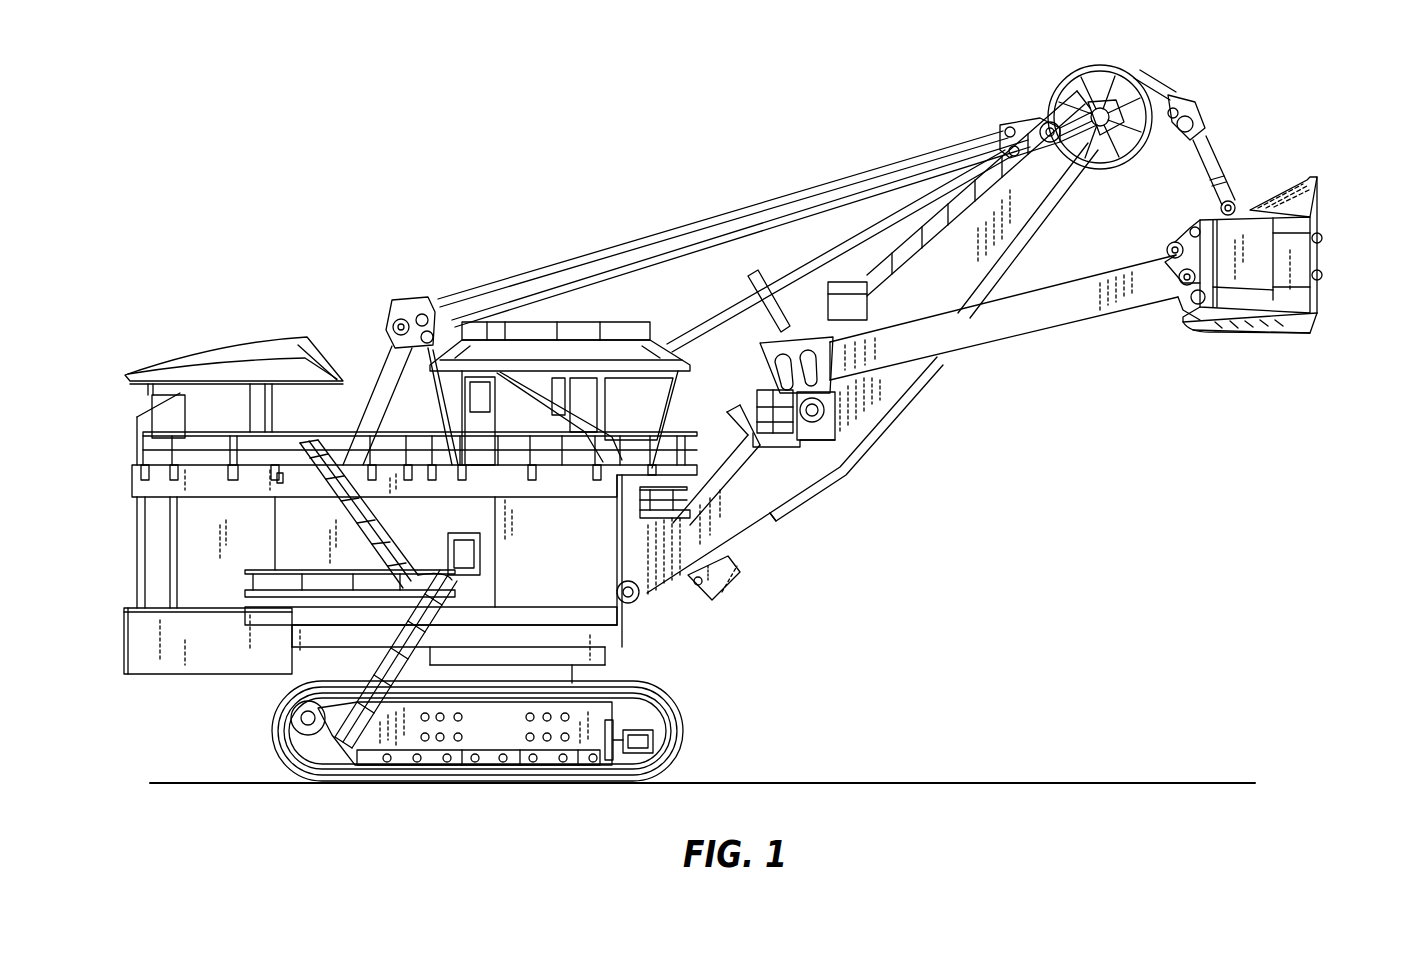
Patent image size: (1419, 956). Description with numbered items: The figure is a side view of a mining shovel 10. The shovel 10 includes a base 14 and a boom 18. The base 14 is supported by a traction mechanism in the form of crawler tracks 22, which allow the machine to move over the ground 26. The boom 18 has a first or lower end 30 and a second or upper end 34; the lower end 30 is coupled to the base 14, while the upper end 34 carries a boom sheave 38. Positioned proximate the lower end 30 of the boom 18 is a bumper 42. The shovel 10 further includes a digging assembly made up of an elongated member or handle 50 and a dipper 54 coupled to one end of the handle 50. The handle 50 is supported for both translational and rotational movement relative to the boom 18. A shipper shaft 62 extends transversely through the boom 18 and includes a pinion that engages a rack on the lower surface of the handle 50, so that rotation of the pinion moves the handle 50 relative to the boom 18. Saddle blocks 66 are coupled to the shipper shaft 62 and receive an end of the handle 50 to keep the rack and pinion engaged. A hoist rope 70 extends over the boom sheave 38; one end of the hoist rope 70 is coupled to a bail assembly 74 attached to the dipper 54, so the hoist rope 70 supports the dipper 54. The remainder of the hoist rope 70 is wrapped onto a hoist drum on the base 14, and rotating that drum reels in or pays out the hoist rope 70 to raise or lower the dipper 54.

The mining shovel 10 is at (326, 186).
The base 14 is at (190, 693).
The boom 18 is at (811, 518).
The crawler tracks 22 is at (683, 738).
The ground 26 is at (1000, 782).
The lower end 30 is at (640, 601).
The upper end 34 is at (1097, 97).
The boom sheave 38 is at (1083, 67).
The bumper 42 is at (735, 585).
The handle 50 is at (1034, 345).
The dipper 54 is at (1338, 242).
The shipper shaft 62 is at (815, 422).
The saddle blocks 66 is at (762, 345).
The hoist rope 70 is at (1023, 108).
The bail assembly 74 is at (1233, 132).